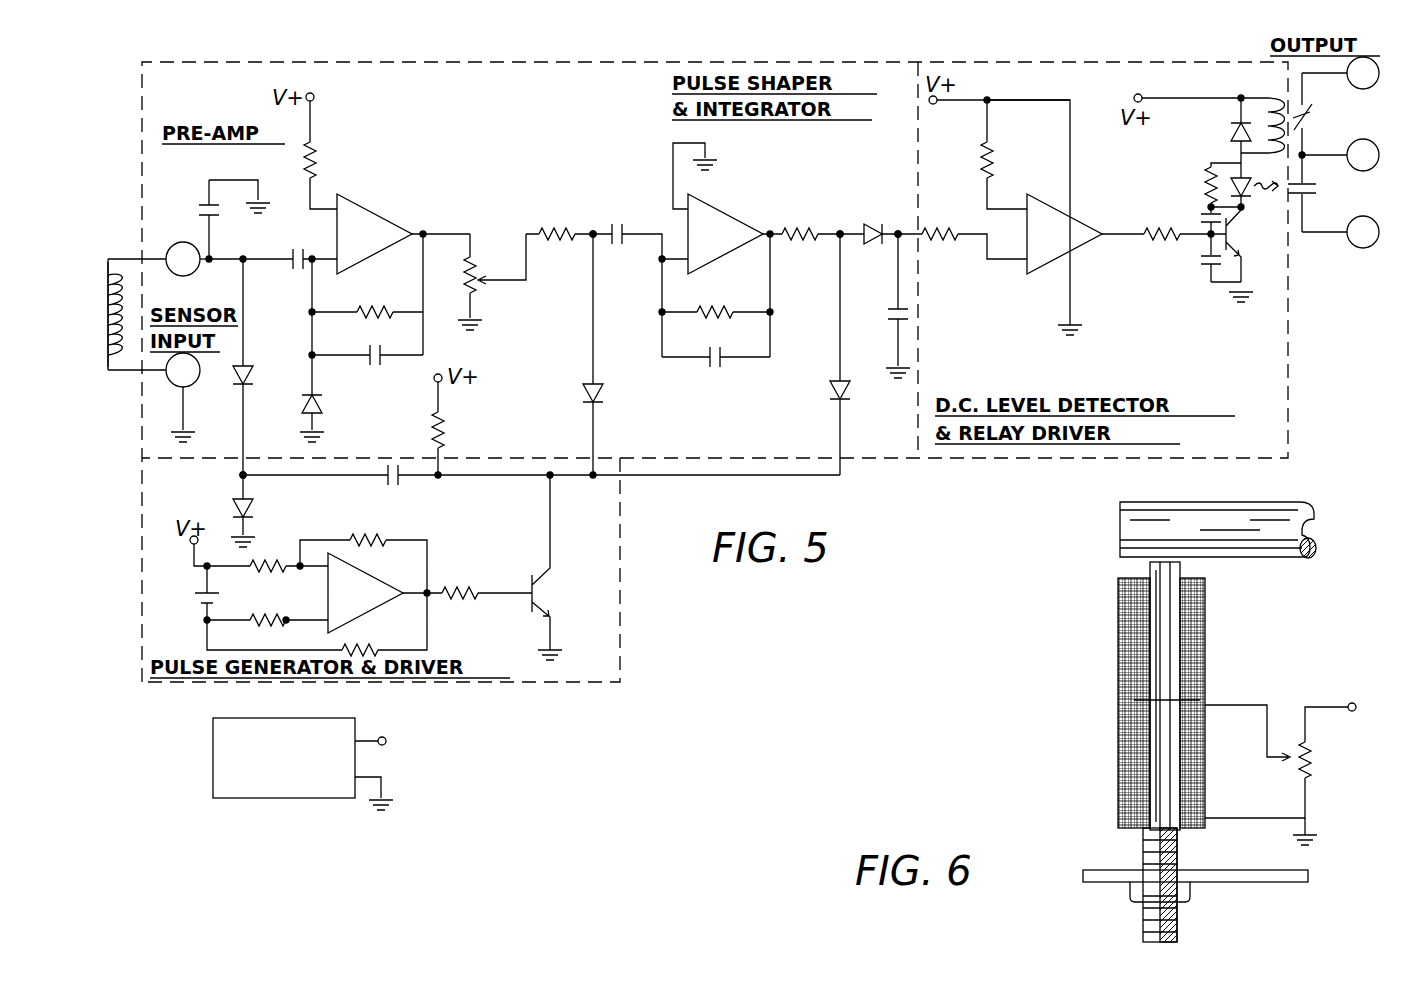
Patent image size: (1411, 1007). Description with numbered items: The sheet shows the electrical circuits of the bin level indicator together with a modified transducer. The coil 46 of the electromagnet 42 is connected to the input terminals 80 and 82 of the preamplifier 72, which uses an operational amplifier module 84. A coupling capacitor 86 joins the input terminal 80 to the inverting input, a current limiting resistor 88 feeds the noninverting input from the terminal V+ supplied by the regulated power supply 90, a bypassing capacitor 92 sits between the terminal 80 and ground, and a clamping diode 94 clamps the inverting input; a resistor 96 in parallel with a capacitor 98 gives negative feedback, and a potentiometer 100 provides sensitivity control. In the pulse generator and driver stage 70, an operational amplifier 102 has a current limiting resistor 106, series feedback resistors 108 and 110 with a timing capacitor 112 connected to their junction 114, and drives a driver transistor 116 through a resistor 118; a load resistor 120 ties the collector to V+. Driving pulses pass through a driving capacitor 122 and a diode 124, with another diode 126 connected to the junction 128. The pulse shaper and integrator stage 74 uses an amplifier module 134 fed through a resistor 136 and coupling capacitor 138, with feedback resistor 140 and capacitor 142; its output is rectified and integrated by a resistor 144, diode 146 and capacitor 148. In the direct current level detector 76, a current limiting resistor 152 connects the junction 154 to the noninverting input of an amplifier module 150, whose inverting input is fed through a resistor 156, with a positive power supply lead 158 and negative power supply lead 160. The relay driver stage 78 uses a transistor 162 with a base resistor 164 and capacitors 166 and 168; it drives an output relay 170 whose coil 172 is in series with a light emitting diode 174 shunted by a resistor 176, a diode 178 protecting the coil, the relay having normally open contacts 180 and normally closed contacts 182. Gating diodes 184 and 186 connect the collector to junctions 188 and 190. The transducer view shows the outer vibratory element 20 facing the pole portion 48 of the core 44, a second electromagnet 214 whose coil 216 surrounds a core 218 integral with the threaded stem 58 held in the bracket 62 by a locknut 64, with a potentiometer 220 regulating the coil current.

In FIG. 6, the outer vibratory element 20 is at (1124, 520).
In FIG. 5, the electromagnet 42 is at (123, 236).
In FIG. 6, the electromagnet 42 is at (1223, 613).
In FIG. 6, the core 44 is at (1160, 620).
In FIG. 5, the coil 46 is at (106, 300).
In FIG. 6, the coil 46 is at (1206, 647).
In FIG. 6, the pole portion 48 is at (1160, 572).
In FIG. 6, the threaded stem 58 is at (1179, 928).
In FIG. 6, the bracket 62 is at (1268, 882).
In FIG. 6, the locknut 64 is at (1133, 891).
In FIG. 5, the pulse generator and driver stage 70 is at (528, 667).
In FIG. 5, the preamplifier 72 is at (236, 179).
In FIG. 5, the pulse shaper and integrator stage 74 is at (800, 179).
In FIG. 5, the d.c. level detector and relay driver 76 is at (1089, 213).
In FIG. 5, the relay driver stage 78 is at (1187, 77).
In FIG. 5, the input terminal 80 is at (180, 246).
In FIG. 5, the input terminal 82 is at (185, 392).
In FIG. 5, the operational amplifier module 84 is at (384, 204).
In FIG. 5, the coupling capacitor 86 is at (304, 252).
In FIG. 5, the current limiting resistor 88 is at (315, 152).
In FIG. 5, the regulated power supply 90 is at (250, 800).
In FIG. 5, the high frequency bypassing capacitor 92 is at (193, 206).
In FIG. 5, the clamping diode 94 is at (323, 404).
In FIG. 5, the resistor 96 is at (364, 310).
In FIG. 5, the capacitor 98 is at (370, 352).
In FIG. 5, the potentiometer 100 is at (462, 276).
In FIG. 5, the operational amplifier 102 is at (374, 612).
In FIG. 5, the current limiting resistor 106 is at (256, 572).
In FIG. 5, the resistor 108 is at (395, 651).
In FIG. 5, the resistor 110 is at (282, 620).
In FIG. 5, the timing capacitor 112 is at (200, 588).
In FIG. 5, the junction 114 is at (216, 620).
In FIG. 5, the driver transistor 116 is at (546, 588).
In FIG. 5, the resistor 118 is at (485, 572).
In FIG. 5, the load resistor 120 is at (444, 414).
In FIG. 5, the driving capacitor 122 is at (392, 464).
In FIG. 5, the diode 124 is at (253, 384).
In FIG. 5, the diode 126 is at (234, 505).
In FIG. 5, the junction 128 is at (245, 473).
In FIG. 5, the operational amplifier module 134 is at (704, 206).
In FIG. 5, the resistor 136 is at (539, 229).
In FIG. 5, the coupling capacitor 138 is at (612, 227).
In FIG. 5, the resistor 140 is at (700, 308).
In FIG. 5, the capacitor 142 is at (716, 367).
In FIG. 5, the resistor 144 is at (788, 232).
In FIG. 5, the diode 146 is at (862, 228).
In FIG. 5, the capacitor 148 is at (863, 308).
In FIG. 5, the operational amplifier module 150 is at (1044, 193).
In FIG. 5, the current limiting resistor 152 is at (942, 238).
In FIG. 5, the junction 154 is at (901, 230).
In FIG. 5, the resistor 156 is at (984, 152).
In FIG. 5, the positive power supply lead 158 is at (1004, 100).
In FIG. 5, the negative power supply lead 160 is at (1070, 318).
In FIG. 5, the transistor 162 is at (1240, 238).
In FIG. 5, the resistor 164 is at (1160, 220).
In FIG. 5, the capacitor 166 is at (1198, 267).
In FIG. 5, the capacitor 168 is at (1206, 210).
In FIG. 5, the output relay 170 is at (1269, 128).
In FIG. 5, the relay coil 172 is at (1266, 100).
In FIG. 5, the light emitting diode 174 is at (1258, 188).
In FIG. 5, the resistor 176 is at (1211, 172).
In FIG. 5, the diode 178 is at (1232, 134).
In FIG. 5, the normally open contacts 180 is at (1317, 188).
In FIG. 5, the normally closed contacts 182 is at (1314, 118).
In FIG. 5, the diode 184 is at (602, 394).
In FIG. 5, the diode 186 is at (847, 394).
In FIG. 5, the junction 188 is at (584, 238).
In FIG. 5, the junction 190 is at (834, 240).
In FIG. 6, the second electromagnet 214 is at (1106, 733).
In FIG. 6, the coil 216 is at (1132, 765).
In FIG. 6, the core 218 is at (1160, 724).
In FIG. 6, the potentiometer 220 is at (1311, 759).